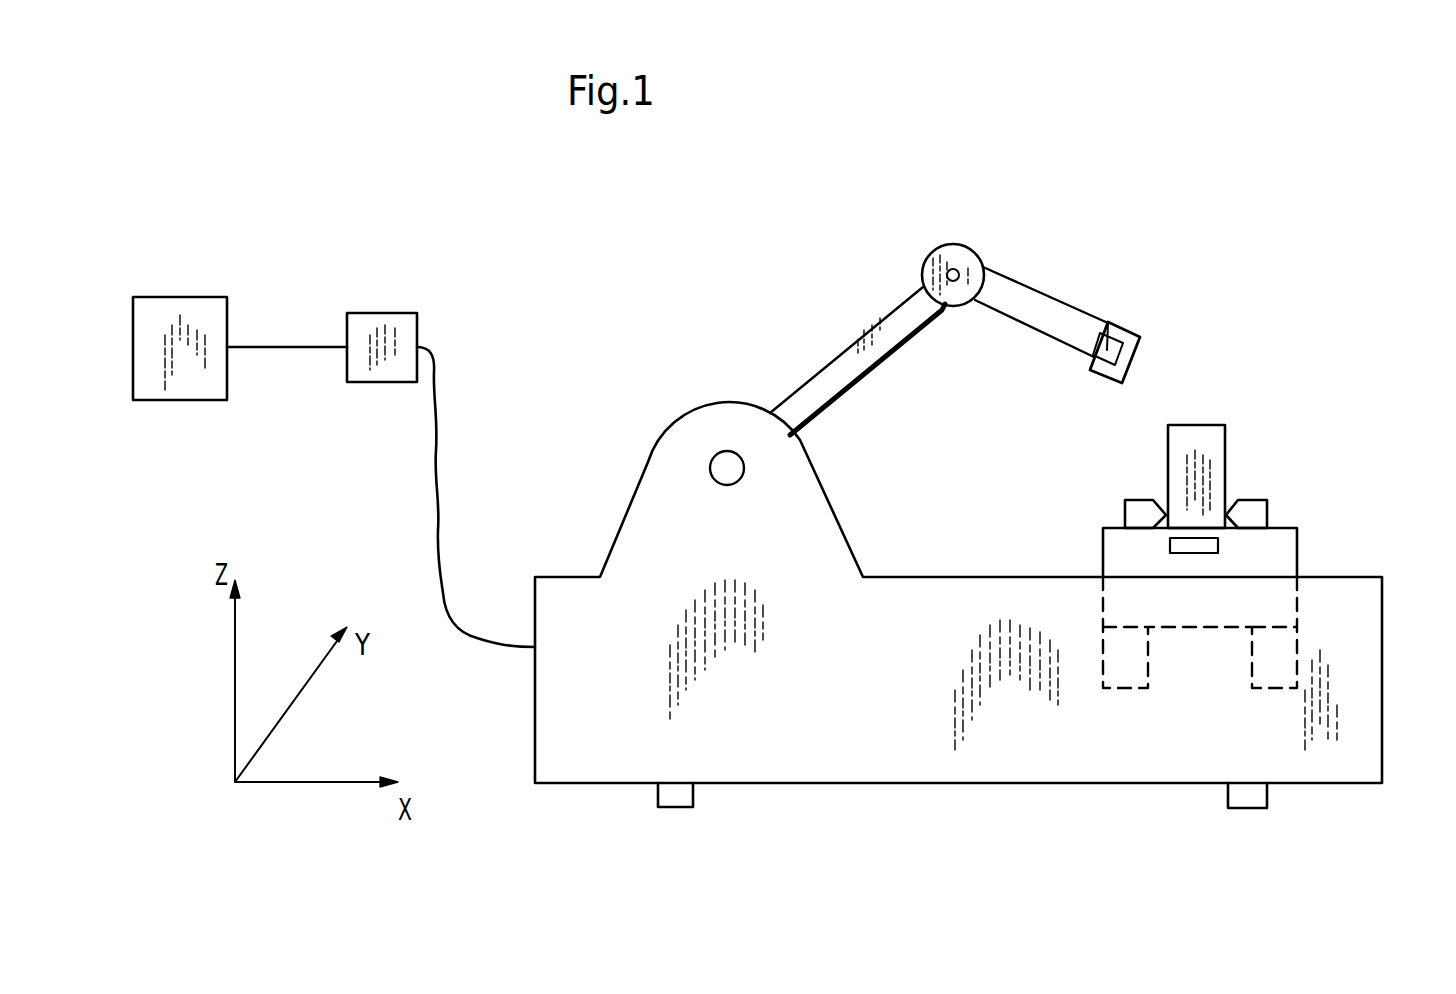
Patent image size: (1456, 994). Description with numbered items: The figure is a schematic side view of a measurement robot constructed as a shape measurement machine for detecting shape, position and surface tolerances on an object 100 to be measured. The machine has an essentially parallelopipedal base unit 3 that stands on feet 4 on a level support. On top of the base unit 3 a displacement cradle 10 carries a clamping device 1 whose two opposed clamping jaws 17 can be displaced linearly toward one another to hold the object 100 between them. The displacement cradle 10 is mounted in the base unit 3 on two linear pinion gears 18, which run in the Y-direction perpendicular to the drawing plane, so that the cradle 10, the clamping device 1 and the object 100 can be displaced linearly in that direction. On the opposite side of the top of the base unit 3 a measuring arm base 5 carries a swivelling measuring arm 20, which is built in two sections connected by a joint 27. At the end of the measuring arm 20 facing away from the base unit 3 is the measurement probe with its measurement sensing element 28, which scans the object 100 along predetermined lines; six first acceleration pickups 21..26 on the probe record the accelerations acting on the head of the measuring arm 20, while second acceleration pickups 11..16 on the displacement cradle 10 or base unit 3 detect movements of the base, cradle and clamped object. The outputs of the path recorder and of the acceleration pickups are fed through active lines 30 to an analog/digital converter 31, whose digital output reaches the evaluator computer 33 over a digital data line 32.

The clamping device 1 is at (1278, 503).
The base unit 3 is at (1333, 678).
The feet 4 is at (1263, 833).
The measuring arm base 5 is at (724, 460).
The displacement cradle 10 is at (1278, 543).
The second acceleration pickups 11..16 is at (1198, 547).
The clamping jaws 17 is at (1125, 508).
The linear pinion gears 18 is at (1278, 638).
The measuring arm 20 is at (880, 332).
The first acceleration pickups 21..26 is at (1107, 343).
The joint 27 is at (952, 268).
The measurement sensing element 28 is at (1166, 447).
The active lines 30 is at (442, 513).
The analog/digital converter 31 is at (387, 313).
The digital data line 32 is at (292, 347).
The evaluator computer 33 is at (178, 297).
The object to be measured 100 is at (1215, 443).